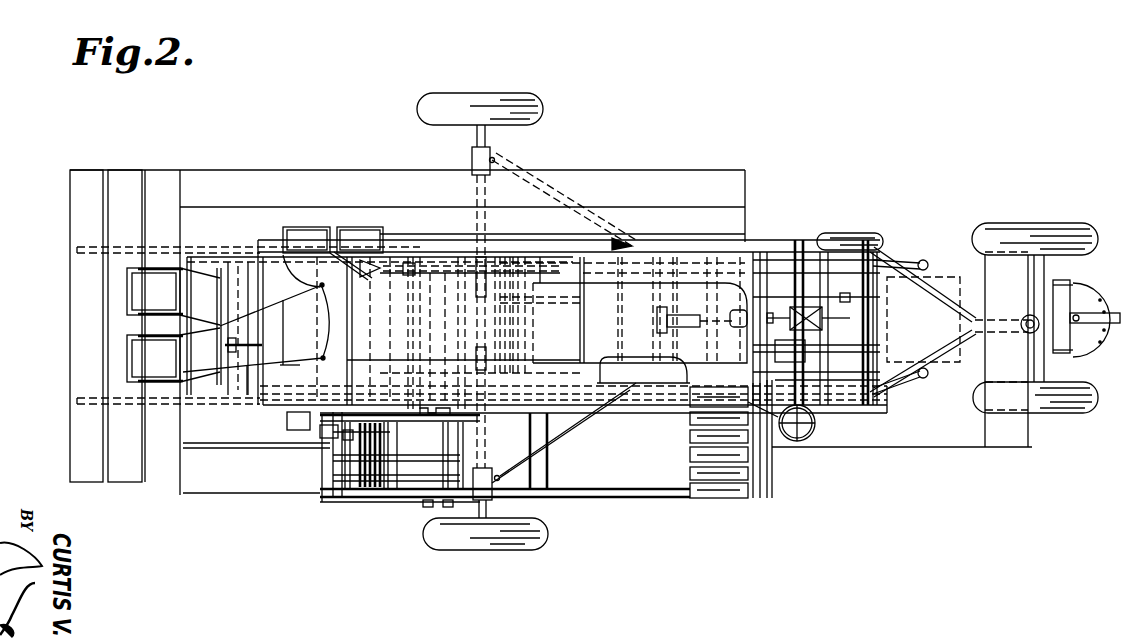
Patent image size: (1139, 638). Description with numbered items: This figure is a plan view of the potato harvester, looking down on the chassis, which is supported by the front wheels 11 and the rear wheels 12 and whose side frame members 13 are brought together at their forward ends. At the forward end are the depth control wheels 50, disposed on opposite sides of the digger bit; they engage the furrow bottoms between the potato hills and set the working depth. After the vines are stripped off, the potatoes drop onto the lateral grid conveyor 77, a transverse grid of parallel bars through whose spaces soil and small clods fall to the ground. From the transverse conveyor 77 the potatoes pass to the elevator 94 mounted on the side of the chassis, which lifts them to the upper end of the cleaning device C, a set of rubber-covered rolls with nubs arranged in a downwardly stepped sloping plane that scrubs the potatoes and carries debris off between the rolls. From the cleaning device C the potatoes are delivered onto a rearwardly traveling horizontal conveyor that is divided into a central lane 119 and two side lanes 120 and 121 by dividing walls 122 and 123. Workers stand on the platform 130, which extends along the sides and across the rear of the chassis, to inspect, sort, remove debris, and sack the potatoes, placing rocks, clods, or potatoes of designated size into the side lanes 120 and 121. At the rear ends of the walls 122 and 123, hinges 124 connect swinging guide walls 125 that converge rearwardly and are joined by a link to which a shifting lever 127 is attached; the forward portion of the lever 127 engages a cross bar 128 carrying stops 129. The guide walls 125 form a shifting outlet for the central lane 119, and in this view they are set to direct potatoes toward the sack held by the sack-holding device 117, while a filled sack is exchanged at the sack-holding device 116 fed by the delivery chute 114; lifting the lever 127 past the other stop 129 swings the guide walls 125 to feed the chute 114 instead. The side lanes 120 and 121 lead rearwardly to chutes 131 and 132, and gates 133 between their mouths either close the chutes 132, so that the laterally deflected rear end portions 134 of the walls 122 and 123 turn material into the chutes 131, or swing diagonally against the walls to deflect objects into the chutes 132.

The front wheels 11 is at (1005, 226).
The rear wheels 12 is at (520, 95).
The side frame members 13 is at (940, 275).
The wheels 50 is at (865, 235).
The lateral grid conveyor 77 is at (360, 490).
The elevator 94 is at (590, 478).
The delivery chute 114 is at (200, 282).
The sack-holding device 116 is at (142, 268).
The sack-holding device 117 is at (172, 387).
The central lane 119 is at (560, 300).
The side lane 120 is at (540, 273).
The side lane 121 is at (533, 363).
The dividing wall 122 is at (583, 280).
The dividing wall 123 is at (545, 365).
The hinges 124 is at (322, 348).
The swinging guide walls 125 is at (284, 300).
The shifting lever 127 is at (247, 363).
The cross bar 128 is at (245, 325).
The stops 129 is at (273, 240).
The platform 130 is at (745, 210).
The chutes 131 is at (296, 240).
The chutes 132 is at (360, 245).
The gates 133 is at (383, 232).
The laterally deflected rear end portions 134 is at (335, 275).
The cleaning device C is at (722, 455).